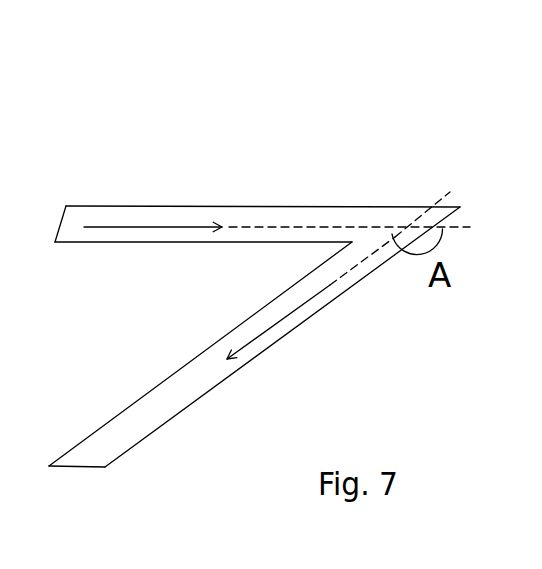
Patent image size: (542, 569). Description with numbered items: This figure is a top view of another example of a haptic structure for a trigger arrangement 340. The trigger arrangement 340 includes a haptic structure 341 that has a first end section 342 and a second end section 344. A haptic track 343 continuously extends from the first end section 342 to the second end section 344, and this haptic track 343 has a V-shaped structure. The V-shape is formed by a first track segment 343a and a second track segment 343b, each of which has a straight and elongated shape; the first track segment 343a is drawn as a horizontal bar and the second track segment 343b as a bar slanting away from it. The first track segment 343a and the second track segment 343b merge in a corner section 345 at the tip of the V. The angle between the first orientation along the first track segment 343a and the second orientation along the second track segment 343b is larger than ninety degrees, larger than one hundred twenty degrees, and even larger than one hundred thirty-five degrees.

The trigger arrangement 340 is at (208, 108).
The haptic structure 341 is at (347, 170).
The first end section 342 is at (70, 230).
The haptic track 343 is at (263, 192).
The first track segment 343a is at (147, 193).
The second track segment 343b is at (218, 397).
The second end section 344 is at (90, 460).
The corner section 345 is at (430, 202).